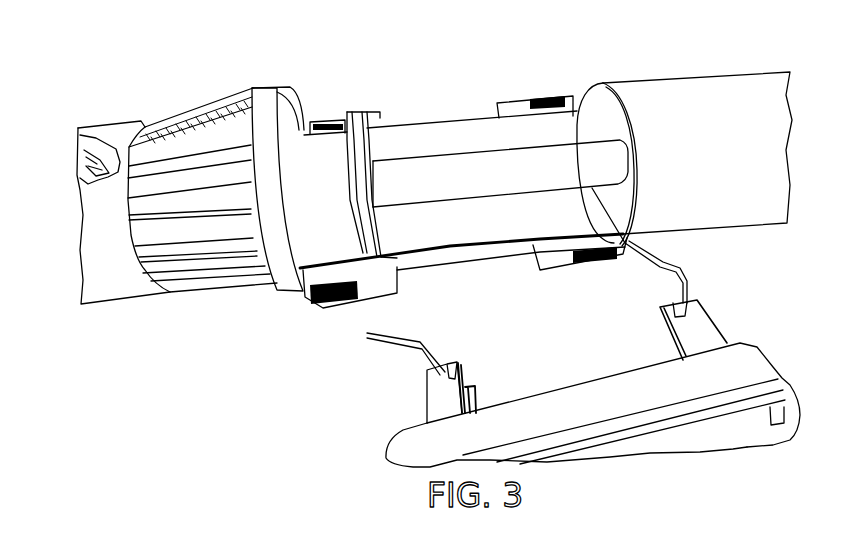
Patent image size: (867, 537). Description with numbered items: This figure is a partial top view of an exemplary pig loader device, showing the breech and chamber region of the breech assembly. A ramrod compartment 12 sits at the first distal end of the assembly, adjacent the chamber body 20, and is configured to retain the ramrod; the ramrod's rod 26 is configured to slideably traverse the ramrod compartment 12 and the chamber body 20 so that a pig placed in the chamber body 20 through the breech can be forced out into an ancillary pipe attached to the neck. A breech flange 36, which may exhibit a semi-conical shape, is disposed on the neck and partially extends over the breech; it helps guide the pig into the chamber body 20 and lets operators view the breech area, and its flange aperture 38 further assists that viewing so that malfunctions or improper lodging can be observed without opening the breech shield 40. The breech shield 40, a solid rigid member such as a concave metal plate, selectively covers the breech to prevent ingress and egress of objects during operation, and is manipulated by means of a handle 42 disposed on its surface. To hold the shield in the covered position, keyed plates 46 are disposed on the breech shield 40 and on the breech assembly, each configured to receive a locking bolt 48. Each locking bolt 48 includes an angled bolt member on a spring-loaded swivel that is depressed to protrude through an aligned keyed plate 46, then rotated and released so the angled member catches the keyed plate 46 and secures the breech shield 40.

The ramrod compartment 12 is at (703, 78).
The chamber body 20 is at (430, 123).
The rod 26 is at (427, 200).
The breech flange 36 is at (268, 82).
The flange aperture 38 is at (178, 108).
The breech shield 40 is at (733, 381).
The handle 42 is at (775, 370).
The keyed plate 46 is at (320, 303).
The locking bolt 48 is at (687, 285).